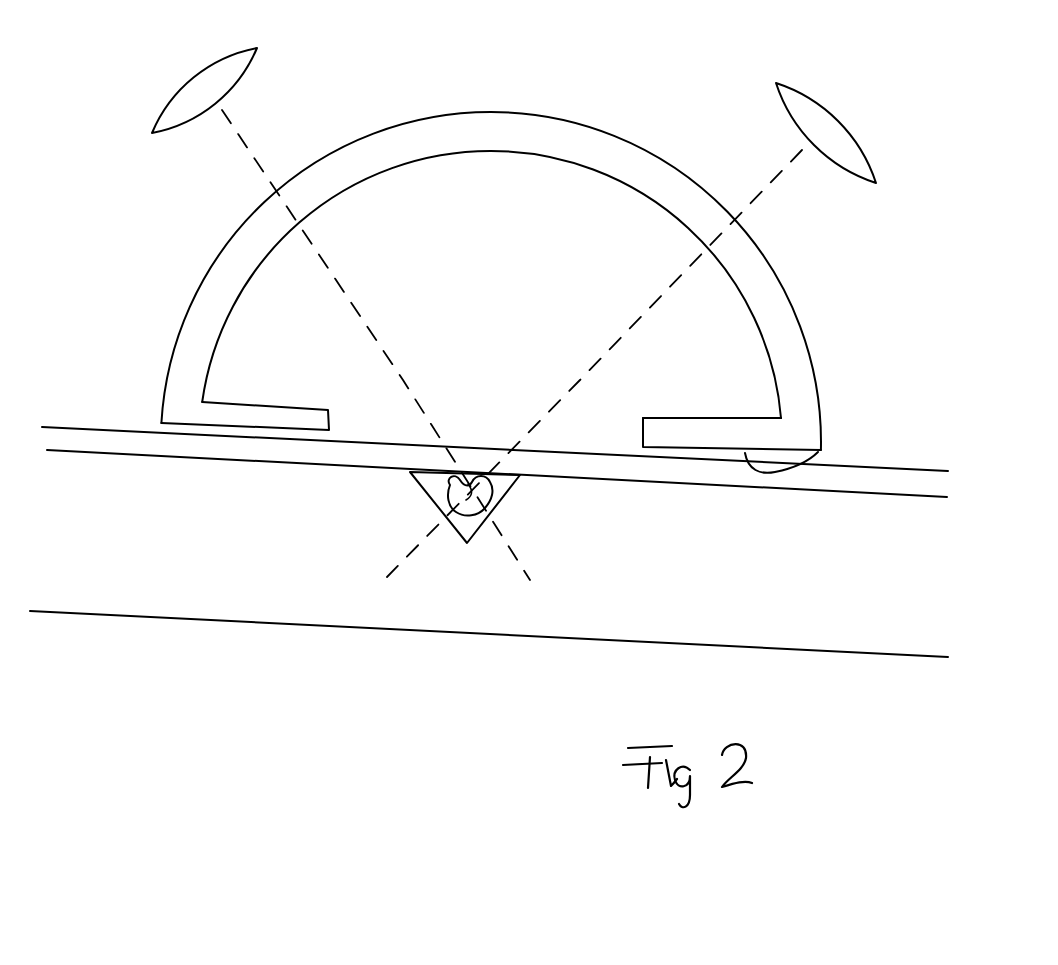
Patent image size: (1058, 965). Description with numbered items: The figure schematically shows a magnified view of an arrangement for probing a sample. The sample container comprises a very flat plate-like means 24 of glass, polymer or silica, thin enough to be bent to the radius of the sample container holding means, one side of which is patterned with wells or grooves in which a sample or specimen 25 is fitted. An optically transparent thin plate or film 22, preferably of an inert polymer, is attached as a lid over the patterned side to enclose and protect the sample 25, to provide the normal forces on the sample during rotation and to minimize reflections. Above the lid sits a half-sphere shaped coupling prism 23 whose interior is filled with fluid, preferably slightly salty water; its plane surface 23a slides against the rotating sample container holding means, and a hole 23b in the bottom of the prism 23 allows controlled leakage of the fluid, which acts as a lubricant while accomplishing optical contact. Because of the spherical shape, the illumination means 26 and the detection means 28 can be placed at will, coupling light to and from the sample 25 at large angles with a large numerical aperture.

The optically transparent thin plate or film 22 is at (157, 445).
The half-sphere shaped coupling prism 23 is at (772, 295).
The plane surface 23a is at (820, 452).
The hole 23b is at (609, 427).
The plate-like means 24 is at (830, 595).
The sample or specimen 25 is at (482, 490).
The illumination means 26 is at (228, 70).
The detection means 28 is at (780, 100).